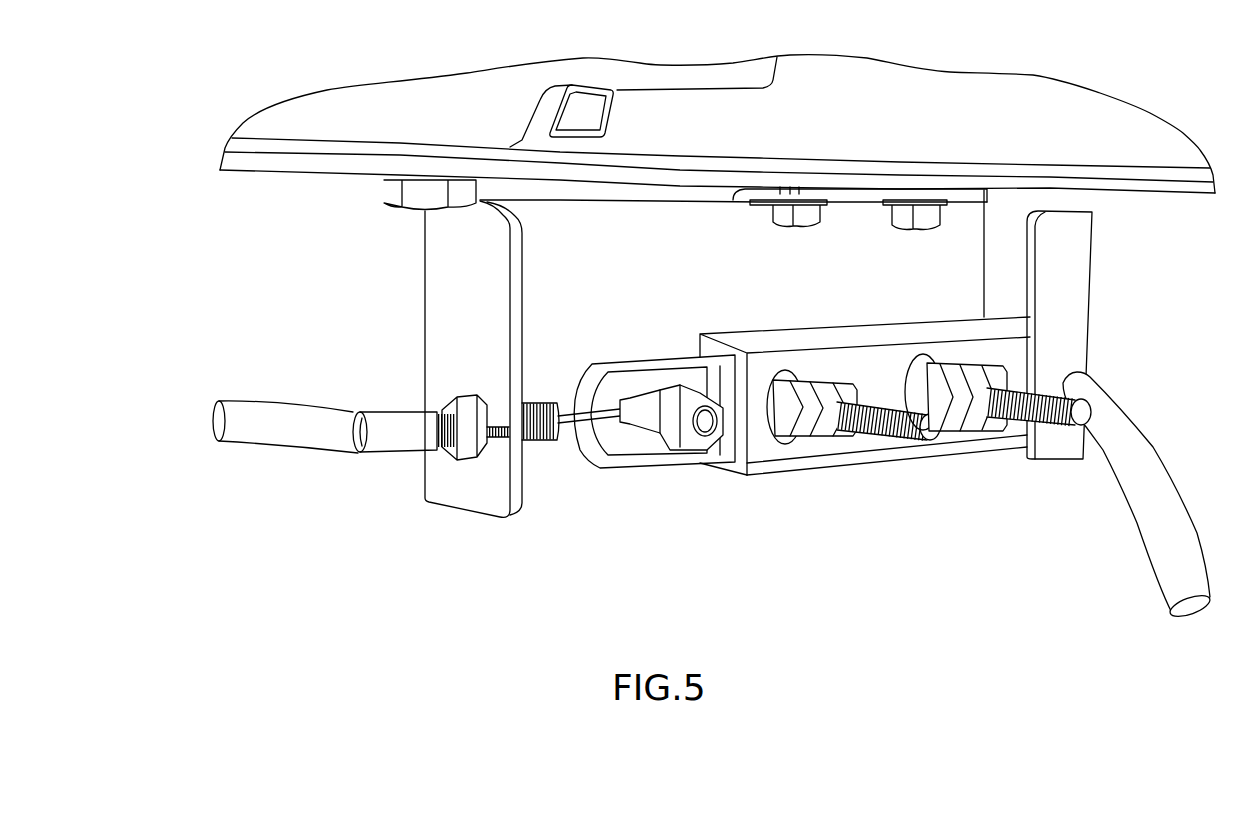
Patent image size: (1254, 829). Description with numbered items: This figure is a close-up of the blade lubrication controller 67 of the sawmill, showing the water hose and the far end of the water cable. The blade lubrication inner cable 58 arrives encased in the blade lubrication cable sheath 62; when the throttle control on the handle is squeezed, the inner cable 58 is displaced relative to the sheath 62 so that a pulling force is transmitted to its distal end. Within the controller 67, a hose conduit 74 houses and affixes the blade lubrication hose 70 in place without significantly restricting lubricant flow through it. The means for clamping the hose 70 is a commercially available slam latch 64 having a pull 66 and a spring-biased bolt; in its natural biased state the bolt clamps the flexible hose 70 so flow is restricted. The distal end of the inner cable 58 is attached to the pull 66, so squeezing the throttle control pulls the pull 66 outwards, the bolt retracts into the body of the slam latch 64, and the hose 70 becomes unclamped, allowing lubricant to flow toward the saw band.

The blade lubrication inner cable 58 is at (580, 472).
The blade lubrication cable sheath 62 is at (277, 422).
The slam latch 64 is at (797, 460).
The pull 66 is at (647, 467).
The blade lubrication controller 67 is at (755, 504).
The blade lubrication hose 70 is at (1127, 433).
The hose conduit 74 is at (1067, 317).